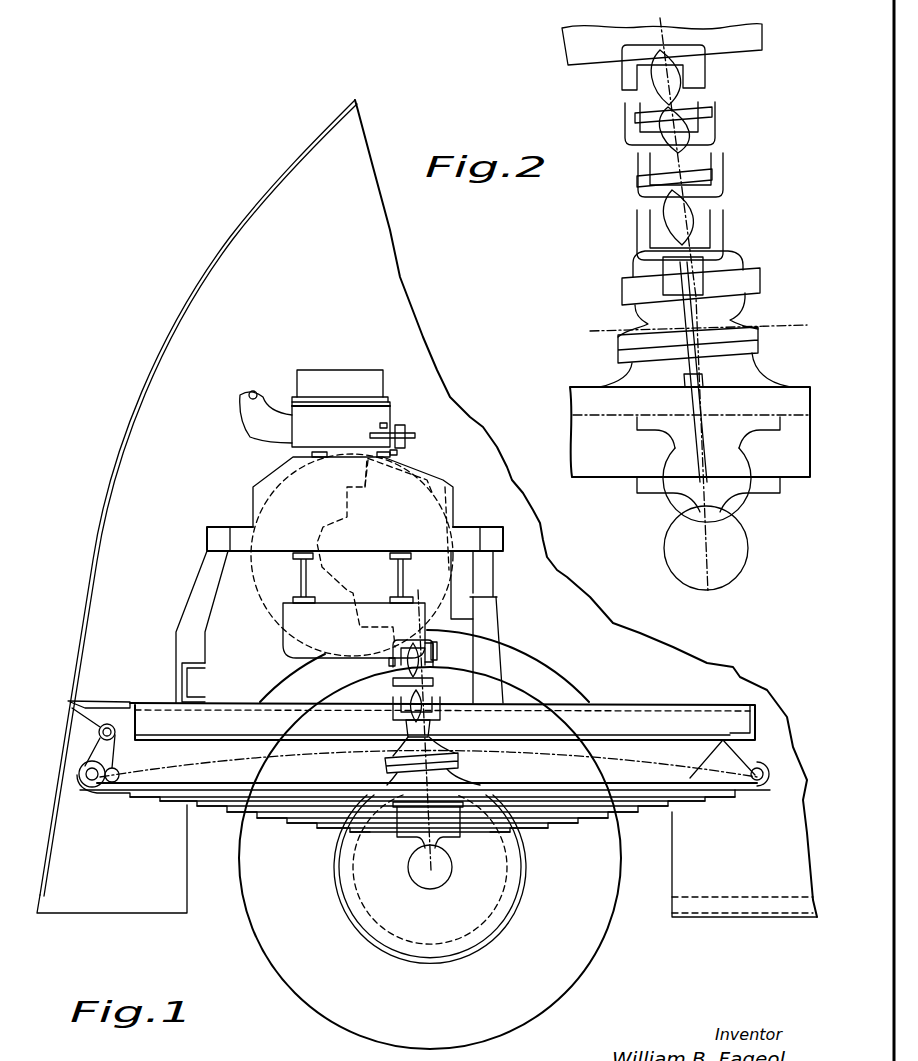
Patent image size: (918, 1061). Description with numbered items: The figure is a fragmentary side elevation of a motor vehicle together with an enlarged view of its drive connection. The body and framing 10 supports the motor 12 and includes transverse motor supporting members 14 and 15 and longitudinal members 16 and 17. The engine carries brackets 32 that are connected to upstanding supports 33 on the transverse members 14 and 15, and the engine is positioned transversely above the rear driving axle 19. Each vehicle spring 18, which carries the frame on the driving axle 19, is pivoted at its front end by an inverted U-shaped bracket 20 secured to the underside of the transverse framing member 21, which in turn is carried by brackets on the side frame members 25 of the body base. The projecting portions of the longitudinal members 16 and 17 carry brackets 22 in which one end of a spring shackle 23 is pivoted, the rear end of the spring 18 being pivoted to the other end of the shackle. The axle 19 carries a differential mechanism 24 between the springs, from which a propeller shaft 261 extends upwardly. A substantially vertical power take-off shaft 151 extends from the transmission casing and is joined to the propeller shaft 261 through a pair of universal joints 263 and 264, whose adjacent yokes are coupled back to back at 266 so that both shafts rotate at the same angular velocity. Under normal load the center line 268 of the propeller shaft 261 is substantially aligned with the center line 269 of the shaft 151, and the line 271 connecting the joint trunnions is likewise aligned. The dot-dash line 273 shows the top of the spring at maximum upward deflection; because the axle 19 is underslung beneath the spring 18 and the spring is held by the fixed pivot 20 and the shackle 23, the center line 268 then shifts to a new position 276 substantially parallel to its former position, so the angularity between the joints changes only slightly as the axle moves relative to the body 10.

In FIG. 1, the body and framing 10 is at (547, 555).
In FIG. 1, the motor 12 is at (258, 480).
In FIG. 1, the motor supporting member 14 is at (190, 678).
In FIG. 1, the motor supporting member 15 is at (484, 610).
In FIG. 1, the longitudinal member 16 is at (640, 718).
In FIG. 1, the longitudinal member 17 is at (572, 725).
In FIG. 1, the vehicle spring 18 is at (370, 795).
In FIG. 2, the vehicle spring 18 is at (588, 432).
In FIG. 1, the driving axle 19 is at (423, 872).
In FIG. 2, the driving axle 19 is at (722, 573).
In FIG. 1, the inverted U-shaped bracket 20 is at (752, 758).
In FIG. 1, the transverse framing member 21 is at (755, 722).
In FIG. 1, the bracket 22 is at (108, 700).
In FIG. 1, the spring shackle 23 is at (113, 753).
In FIG. 1, the differential mechanism 24 is at (443, 777).
In FIG. 2, the differential mechanism 24 is at (733, 320).
In FIG. 1, the side frame member 25 is at (713, 907).
In FIG. 1, the bracket 32 is at (225, 532).
In FIG. 1, the upstanding support 33 is at (187, 622).
In FIG. 1, the power take-off shaft 151 is at (393, 633).
In FIG. 1, the propeller shaft 261 is at (408, 728).
In FIG. 2, the propeller shaft 261 is at (703, 282).
In FIG. 1, the universal joint 263 is at (397, 700).
In FIG. 2, the universal joint 263 is at (716, 223).
In FIG. 1, the universal joint 264 is at (392, 658).
In FIG. 2, the universal joint 264 is at (632, 112).
In FIG. 1, the back-to-back yoke coupling 266 is at (430, 682).
In FIG. 2, the back-to-back yoke coupling 266 is at (690, 174).
In FIG. 2, the center line of propeller shaft 268 is at (690, 405).
In FIG. 2, the center line of shaft 151 269 is at (657, 36).
In FIG. 2, the line connecting the trunnions 271 is at (656, 205).
In FIG. 1, the dot-dash line 273 is at (233, 763).
In FIG. 2, the dot-dash line 273 is at (602, 336).
In FIG. 2, the new position of center line 276 is at (701, 382).